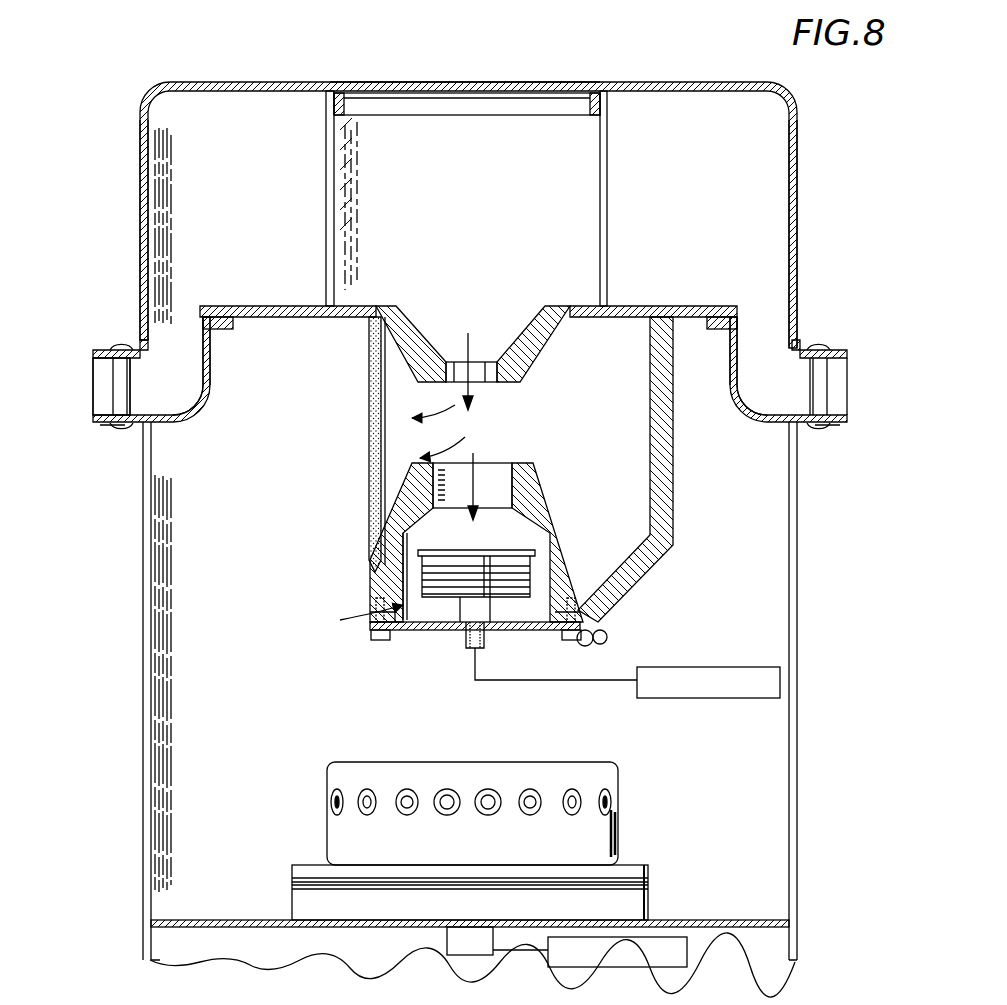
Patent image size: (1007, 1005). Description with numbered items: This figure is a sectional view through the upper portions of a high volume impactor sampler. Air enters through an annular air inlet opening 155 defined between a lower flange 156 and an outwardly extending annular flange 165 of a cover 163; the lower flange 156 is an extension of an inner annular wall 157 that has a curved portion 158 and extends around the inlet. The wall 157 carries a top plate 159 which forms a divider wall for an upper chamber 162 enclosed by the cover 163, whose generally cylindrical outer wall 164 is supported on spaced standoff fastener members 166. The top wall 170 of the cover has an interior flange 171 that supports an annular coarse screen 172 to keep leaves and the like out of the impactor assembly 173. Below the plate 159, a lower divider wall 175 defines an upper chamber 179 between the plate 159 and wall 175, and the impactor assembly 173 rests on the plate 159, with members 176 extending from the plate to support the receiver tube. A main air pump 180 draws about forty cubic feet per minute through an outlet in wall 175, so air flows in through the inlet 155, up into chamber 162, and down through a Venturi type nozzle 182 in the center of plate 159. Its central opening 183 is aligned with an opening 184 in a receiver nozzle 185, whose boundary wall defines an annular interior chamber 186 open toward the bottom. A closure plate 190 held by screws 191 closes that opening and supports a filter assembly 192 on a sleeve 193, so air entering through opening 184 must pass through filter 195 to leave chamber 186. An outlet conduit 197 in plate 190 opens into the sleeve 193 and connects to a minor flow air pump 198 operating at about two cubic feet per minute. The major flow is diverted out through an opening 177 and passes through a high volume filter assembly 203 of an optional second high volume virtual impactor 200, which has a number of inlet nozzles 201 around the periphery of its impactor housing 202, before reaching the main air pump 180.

The annular air inlet opening 155 is at (100, 388).
The lower flange 156 is at (125, 425).
The inner annular wall 157 is at (212, 346).
The curved portion 158 is at (190, 420).
The top plate 159 is at (697, 306).
The upper chamber 162 is at (775, 160).
The cover 163 is at (677, 82).
The outer wall 164 is at (142, 172).
The annular flange 165 is at (92, 352).
The standoff fastener members 166 is at (812, 390).
The top wall 170 is at (463, 82).
The flange 171 is at (438, 118).
The annular coarse screen 172 is at (607, 165).
The impactor assembly 173 is at (345, 425).
The lower divider wall 175 is at (693, 920).
The support members 176 is at (680, 530).
The opening 177 is at (362, 457).
The upper chamber 179 is at (190, 560).
The air pump 180 is at (640, 967).
The nozzle 182 is at (535, 358).
The central opening 183 is at (463, 330).
The opening 184 is at (497, 470).
The receiver nozzle 185 is at (540, 495).
The annular interior chamber 186 is at (400, 535).
The closure plate 190 is at (450, 630).
The screws 191 is at (590, 640).
The filter assembly 192 is at (350, 619).
The sleeve 193 is at (445, 622).
The filter 195 is at (527, 572).
The outlet conduit 197 is at (485, 640).
The minor flow air pump 198 is at (755, 667).
The second high volume virtual impactor 200 is at (597, 770).
The inlet nozzles 201 is at (530, 790).
The impactor housing 202 is at (610, 838).
The high volume filter assembly 203 is at (292, 885).